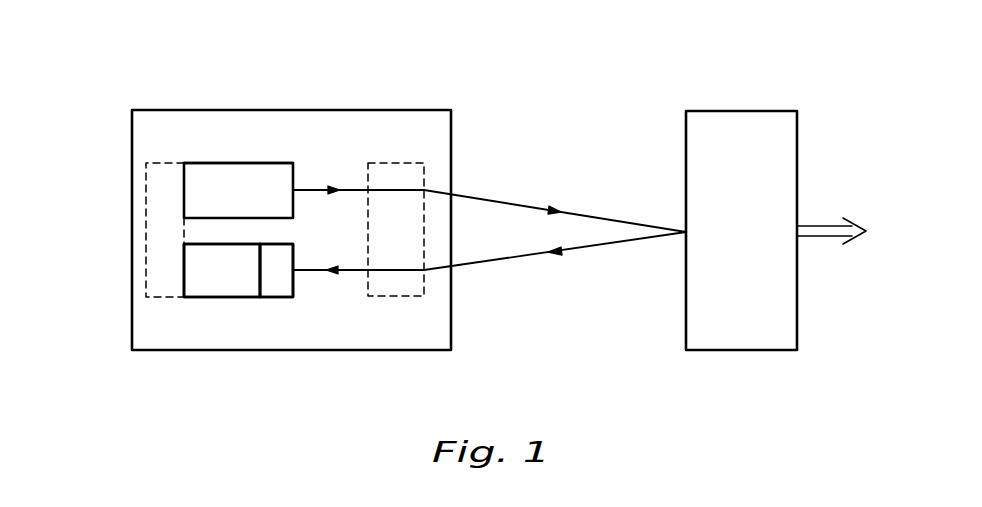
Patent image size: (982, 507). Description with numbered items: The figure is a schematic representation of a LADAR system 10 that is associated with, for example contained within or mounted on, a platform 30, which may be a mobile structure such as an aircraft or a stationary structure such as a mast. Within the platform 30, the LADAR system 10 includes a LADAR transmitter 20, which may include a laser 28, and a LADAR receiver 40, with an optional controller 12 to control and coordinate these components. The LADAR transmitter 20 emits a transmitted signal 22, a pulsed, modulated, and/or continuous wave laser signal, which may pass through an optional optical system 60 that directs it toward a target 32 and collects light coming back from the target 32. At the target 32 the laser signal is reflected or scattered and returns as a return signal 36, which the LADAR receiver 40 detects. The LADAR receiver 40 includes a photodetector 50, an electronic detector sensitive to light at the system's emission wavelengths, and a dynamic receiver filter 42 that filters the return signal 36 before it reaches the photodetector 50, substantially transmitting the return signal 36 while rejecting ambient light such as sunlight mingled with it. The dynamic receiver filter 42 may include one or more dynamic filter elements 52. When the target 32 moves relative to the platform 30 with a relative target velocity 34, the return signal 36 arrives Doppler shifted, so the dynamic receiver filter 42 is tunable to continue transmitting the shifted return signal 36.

The LADAR system 10 is at (136, 70).
The controller 12 is at (155, 163).
The LADAR transmitter 20 is at (215, 164).
The transmitted signal 22 is at (580, 212).
The laser 28 is at (272, 163).
The platform 30 is at (370, 110).
The target 32 is at (722, 111).
The relative target velocity 34 is at (825, 225).
The return signal 36 is at (578, 250).
The LADAR receiver 40 is at (196, 298).
The dynamic receiver filter 42 is at (273, 297).
The photodetector 50 is at (228, 297).
The dynamic filter element 52 is at (287, 297).
The optical system 60 is at (405, 297).